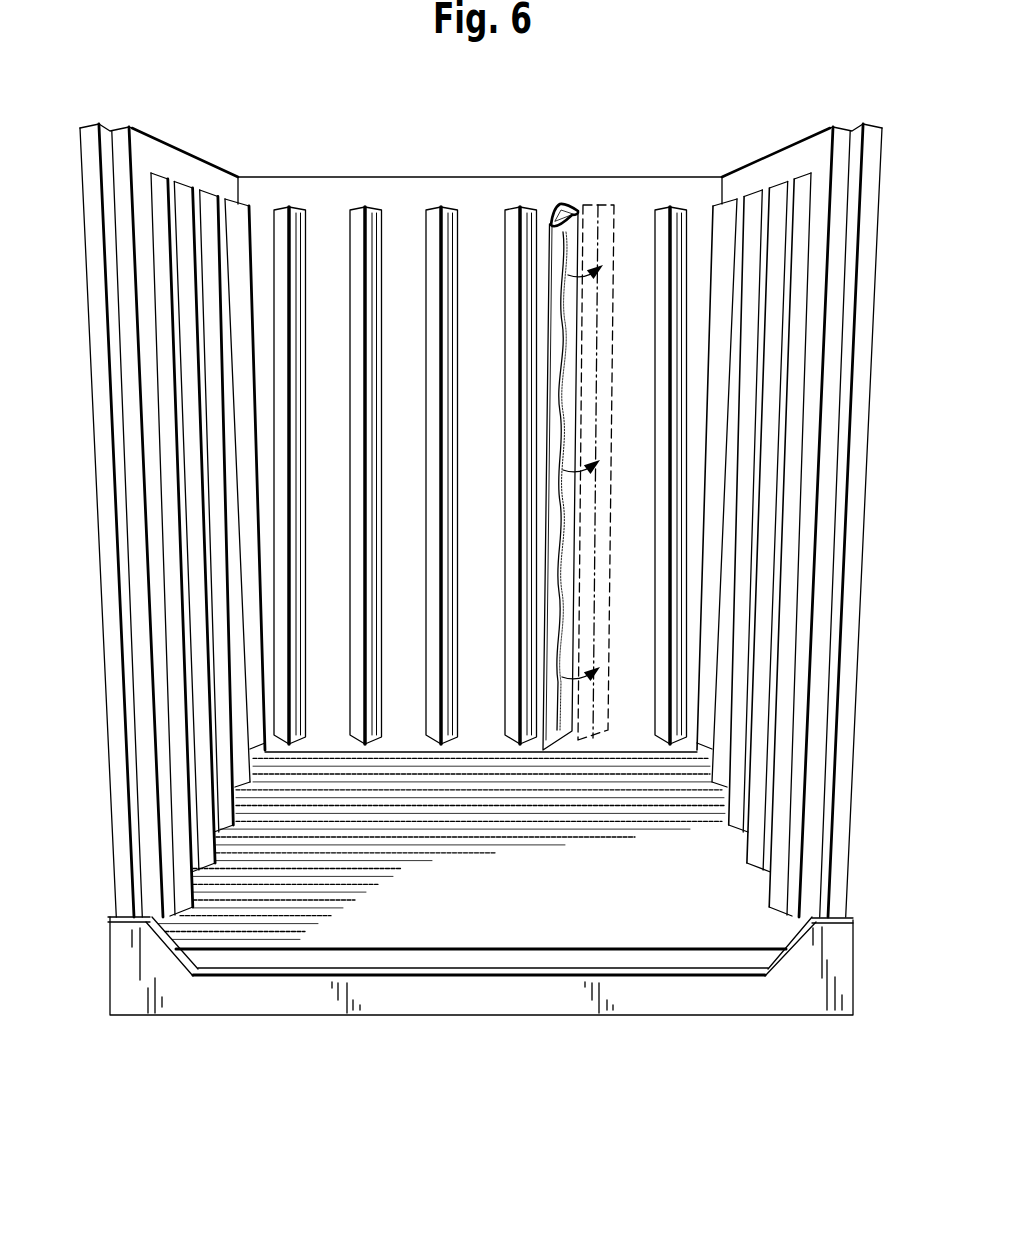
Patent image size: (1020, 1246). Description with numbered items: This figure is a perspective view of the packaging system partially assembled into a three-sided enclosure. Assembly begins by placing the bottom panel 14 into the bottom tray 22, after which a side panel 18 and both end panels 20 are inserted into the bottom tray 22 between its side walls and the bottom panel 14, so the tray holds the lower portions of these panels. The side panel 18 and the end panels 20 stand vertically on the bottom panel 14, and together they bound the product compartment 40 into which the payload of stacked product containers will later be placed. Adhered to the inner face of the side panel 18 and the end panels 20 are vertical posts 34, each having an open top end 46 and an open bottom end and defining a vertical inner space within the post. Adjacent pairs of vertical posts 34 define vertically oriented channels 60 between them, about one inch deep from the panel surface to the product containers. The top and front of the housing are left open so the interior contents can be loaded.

The bottom panel 14 is at (453, 933).
The side panel 18 is at (522, 185).
The end panel 20 is at (77, 142).
The bottom tray 22 is at (783, 985).
The vertical post 34 is at (370, 225).
The product compartment 40 is at (410, 775).
The open top end 46 is at (303, 211).
The vertically oriented channel 60 is at (323, 234).